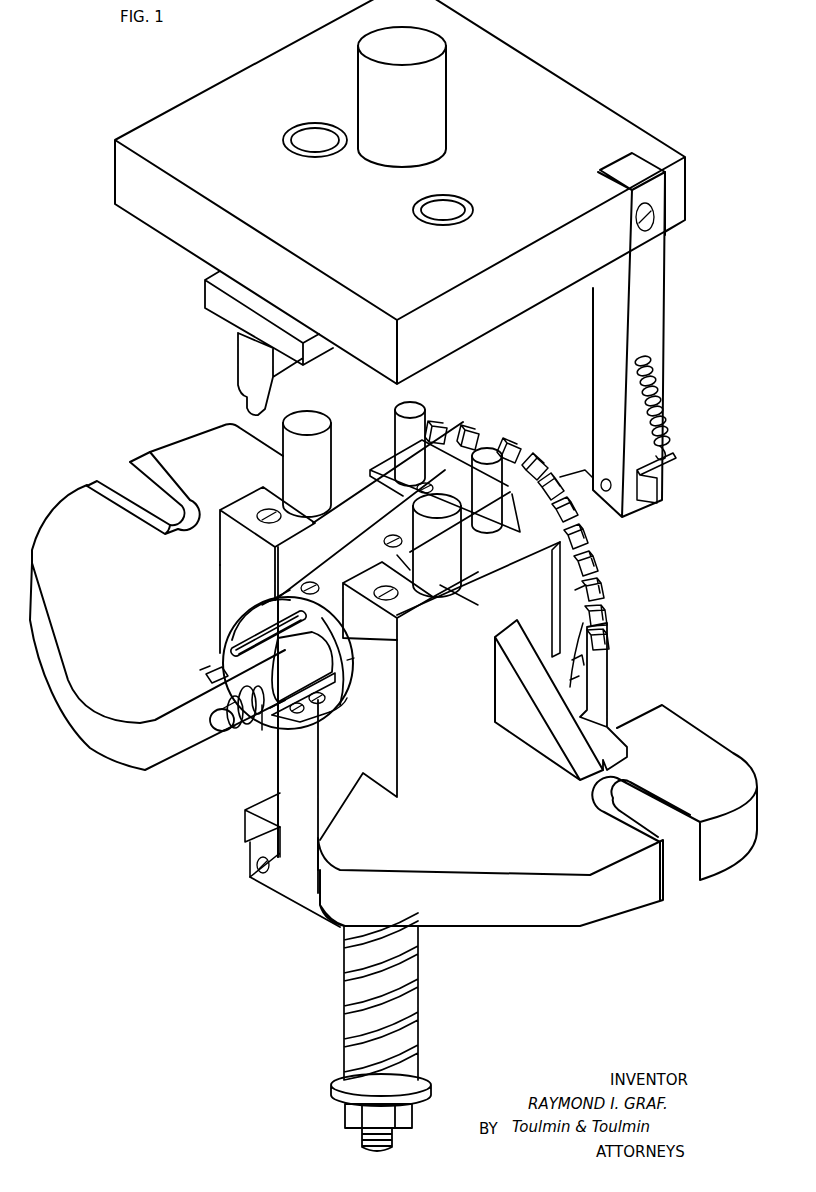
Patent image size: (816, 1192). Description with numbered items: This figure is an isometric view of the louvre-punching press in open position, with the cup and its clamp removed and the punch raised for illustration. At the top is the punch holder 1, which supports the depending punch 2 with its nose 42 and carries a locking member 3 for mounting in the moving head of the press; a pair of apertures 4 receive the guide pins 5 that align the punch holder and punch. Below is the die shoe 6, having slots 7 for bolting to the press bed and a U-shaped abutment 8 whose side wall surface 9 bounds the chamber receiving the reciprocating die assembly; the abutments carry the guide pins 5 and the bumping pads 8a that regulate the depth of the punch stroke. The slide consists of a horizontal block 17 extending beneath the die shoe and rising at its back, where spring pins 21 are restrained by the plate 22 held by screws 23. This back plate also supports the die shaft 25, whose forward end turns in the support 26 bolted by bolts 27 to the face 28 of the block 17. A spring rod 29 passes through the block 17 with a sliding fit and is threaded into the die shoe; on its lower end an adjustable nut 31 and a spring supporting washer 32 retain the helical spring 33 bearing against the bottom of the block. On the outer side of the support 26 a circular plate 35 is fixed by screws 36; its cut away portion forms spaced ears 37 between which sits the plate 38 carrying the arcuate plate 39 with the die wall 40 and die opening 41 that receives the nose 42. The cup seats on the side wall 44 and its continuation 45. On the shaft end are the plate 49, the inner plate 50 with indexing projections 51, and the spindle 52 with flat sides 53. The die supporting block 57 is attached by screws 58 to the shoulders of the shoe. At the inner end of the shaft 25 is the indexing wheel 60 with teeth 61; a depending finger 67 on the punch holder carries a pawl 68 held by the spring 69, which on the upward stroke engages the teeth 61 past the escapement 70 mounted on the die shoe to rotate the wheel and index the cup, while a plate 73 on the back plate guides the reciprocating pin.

The punch holder 1 is at (607, 121).
The punch 2 is at (243, 357).
The locking member 3 is at (437, 97).
The apertures 4 is at (306, 136).
The guide pins 5 is at (315, 421).
The die shoe 6 is at (543, 916).
The slots 7 is at (157, 510).
The U-shaped abutment 8 is at (465, 682).
The bumping pads 8a is at (250, 498).
The side wall surface 9 is at (347, 532).
The horizontal block 17 is at (245, 822).
The spring pins 21 is at (417, 410).
The plate 22 is at (385, 471).
The screws 23 is at (430, 486).
The die shaft 25 is at (265, 708).
The support 26 is at (288, 880).
The bolts 27 is at (256, 867).
The face 28 is at (247, 845).
The spring rod 29 is at (362, 1141).
The adjustable nut 31 is at (345, 1114).
The spring supporting washer 32 is at (328, 1091).
The helical spring 33 is at (342, 998).
The circular plate 35 is at (337, 719).
The screws 36 is at (300, 714).
The spaced ears 37 is at (255, 605).
The plate 38 is at (320, 641).
The arcuate plate 39 is at (295, 682).
The die wall 40 is at (302, 667).
The die opening 41 is at (260, 632).
The nose 42 is at (306, 472).
The side wall 44 is at (302, 663).
The side wall continuation 45 is at (280, 598).
The plate 49 is at (220, 674).
The inner plate 50 is at (243, 723).
The indexing projections 51 is at (208, 674).
The spindle 52 is at (203, 726).
The flat sides 53 is at (220, 733).
The die supporting block 57 is at (443, 581).
The screws 58 is at (390, 536).
The indexing wheel 60 is at (575, 593).
The teeth 61 is at (607, 612).
The depending finger 67 is at (652, 318).
The pawl 68 is at (585, 481).
The spring 69 is at (664, 422).
The escapement 70 is at (607, 647).
The plate 73 is at (560, 593).